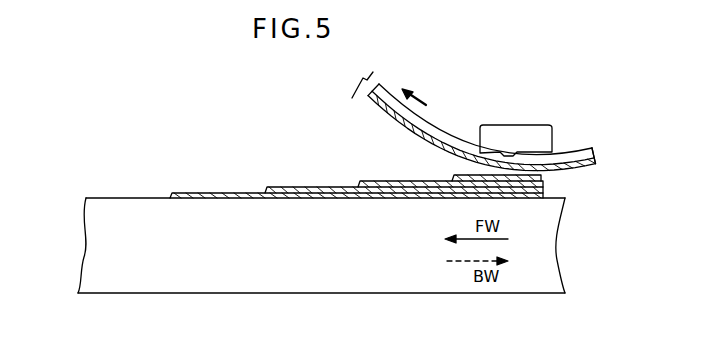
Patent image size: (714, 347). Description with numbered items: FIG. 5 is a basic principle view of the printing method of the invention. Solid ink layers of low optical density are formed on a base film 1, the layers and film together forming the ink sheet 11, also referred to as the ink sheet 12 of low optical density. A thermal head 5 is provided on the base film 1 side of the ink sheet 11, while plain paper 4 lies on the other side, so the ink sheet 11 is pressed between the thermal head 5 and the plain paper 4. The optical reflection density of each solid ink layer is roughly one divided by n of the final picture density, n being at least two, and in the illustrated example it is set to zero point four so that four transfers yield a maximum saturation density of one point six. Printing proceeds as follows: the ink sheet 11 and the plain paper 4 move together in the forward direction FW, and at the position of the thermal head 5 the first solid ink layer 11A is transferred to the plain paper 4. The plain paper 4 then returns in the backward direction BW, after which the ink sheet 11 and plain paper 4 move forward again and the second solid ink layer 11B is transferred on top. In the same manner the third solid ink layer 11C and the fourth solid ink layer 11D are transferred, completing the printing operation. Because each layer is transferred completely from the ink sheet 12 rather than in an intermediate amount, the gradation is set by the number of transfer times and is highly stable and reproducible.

The base film 1 is at (584, 148).
The plain paper 4 is at (84, 257).
The thermal head 5 is at (529, 133).
The ink sheet 11 is at (594, 165).
The first solid ink layer 11A is at (230, 184).
The second solid ink layer 11B is at (285, 184).
The third solid ink layer 11C is at (392, 179).
The fourth solid ink layer 11D is at (455, 177).
The ink sheet of low optical density 12 is at (360, 80).